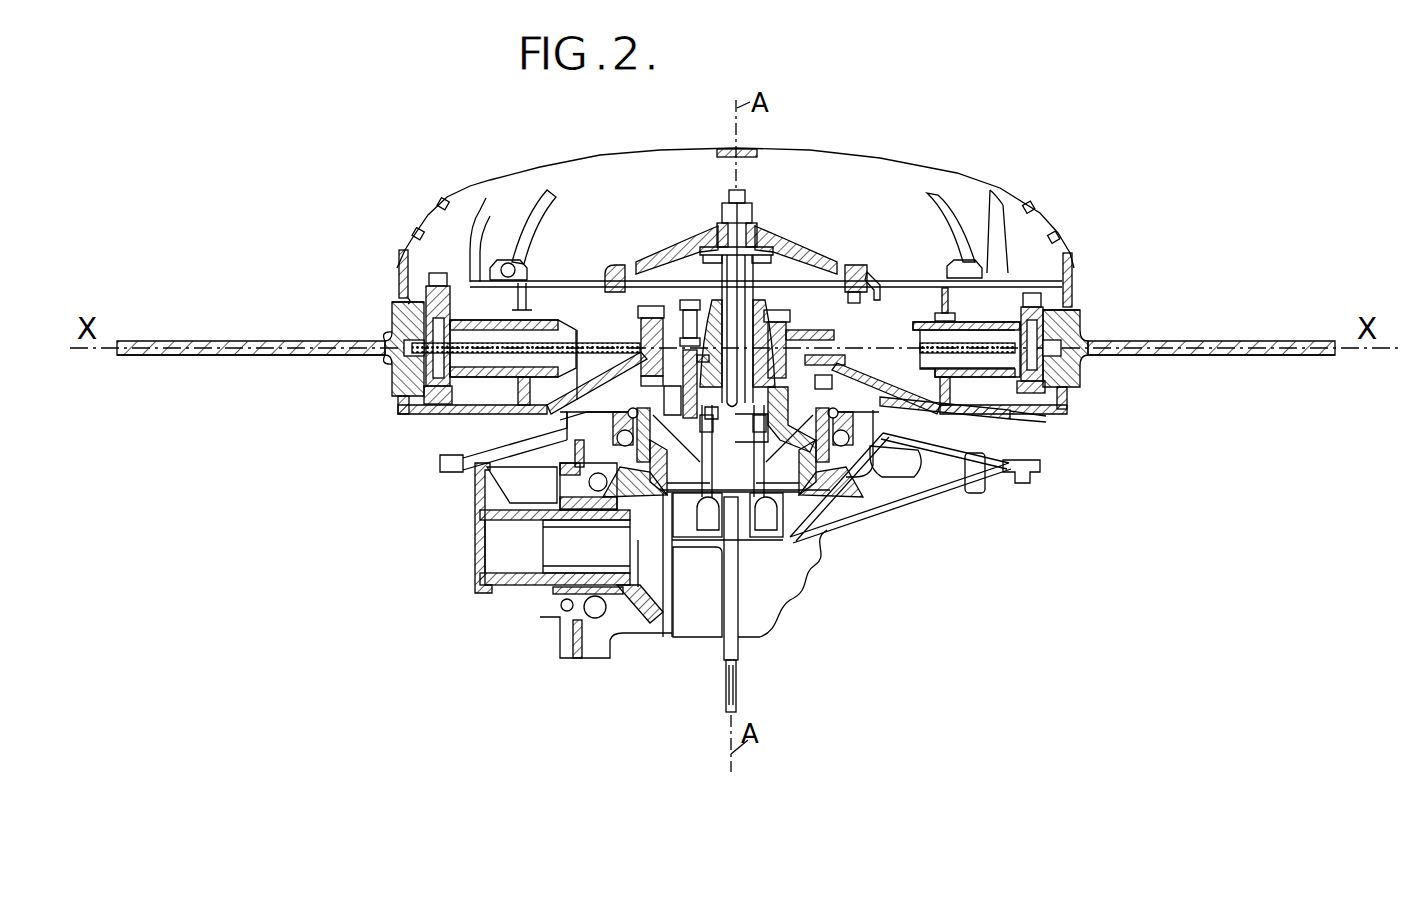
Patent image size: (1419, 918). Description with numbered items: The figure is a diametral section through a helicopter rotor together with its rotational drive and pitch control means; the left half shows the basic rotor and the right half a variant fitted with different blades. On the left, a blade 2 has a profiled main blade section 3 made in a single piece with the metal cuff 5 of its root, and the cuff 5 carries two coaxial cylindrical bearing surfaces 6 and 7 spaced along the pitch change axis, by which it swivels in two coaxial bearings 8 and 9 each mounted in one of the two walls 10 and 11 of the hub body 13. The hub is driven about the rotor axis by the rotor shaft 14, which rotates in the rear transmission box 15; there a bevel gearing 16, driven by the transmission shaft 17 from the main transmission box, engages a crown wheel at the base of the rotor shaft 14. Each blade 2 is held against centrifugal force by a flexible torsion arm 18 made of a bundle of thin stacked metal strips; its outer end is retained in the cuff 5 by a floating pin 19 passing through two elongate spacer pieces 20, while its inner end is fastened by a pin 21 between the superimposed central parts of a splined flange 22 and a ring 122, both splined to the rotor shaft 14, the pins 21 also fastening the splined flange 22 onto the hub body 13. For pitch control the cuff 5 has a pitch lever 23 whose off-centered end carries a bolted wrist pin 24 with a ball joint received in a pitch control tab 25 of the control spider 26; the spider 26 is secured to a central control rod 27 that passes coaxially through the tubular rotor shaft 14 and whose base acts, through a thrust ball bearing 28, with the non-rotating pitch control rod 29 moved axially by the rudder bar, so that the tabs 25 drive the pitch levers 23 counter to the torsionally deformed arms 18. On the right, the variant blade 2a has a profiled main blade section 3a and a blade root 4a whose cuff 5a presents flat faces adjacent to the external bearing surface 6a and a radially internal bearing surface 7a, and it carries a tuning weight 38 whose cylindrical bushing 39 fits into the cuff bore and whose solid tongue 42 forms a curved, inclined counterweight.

The blade 2 is at (198, 336).
The profiled main blade section 3 is at (172, 352).
The blade 2a is at (1237, 338).
The profiled main blade section 3a is at (1253, 352).
The blade root 4a is at (1089, 333).
The cuff 5 is at (403, 330).
The cuff 5a is at (977, 377).
The bearing surface 6 is at (392, 377).
The external bearing surface 6a is at (1077, 382).
The bearing surface 7 is at (535, 305).
The radially internal bearing surface 7a is at (973, 267).
The bearing 8 is at (393, 297).
The bearing 9 is at (501, 261).
The wall 10 is at (405, 274).
The wall 11 is at (527, 298).
The hub body 13 is at (590, 405).
The rotor shaft 14 is at (823, 470).
The rear transmission box 15 is at (705, 647).
The bevel gearing 16 is at (647, 630).
The transmission shaft 17 is at (502, 577).
The torsion arm 18 is at (490, 335).
The pin 19 is at (395, 341).
The spacer pieces 20 is at (410, 380).
The pin 21 is at (650, 308).
The splined flange 22 is at (800, 327).
The pitch lever 23 is at (525, 382).
The bolted wrist pin 24 is at (580, 300).
The pitch control tab 25 is at (607, 290).
The control spider 26 is at (757, 287).
The central control rod 27 is at (745, 300).
The thrust ball bearing 28 is at (557, 523).
The pitch control rod 29 is at (733, 590).
The tuning weight 38 is at (1047, 297).
The cylindrical bushing 39 is at (1067, 317).
The tongue 42 is at (1013, 293).
The ring 122 is at (478, 458).